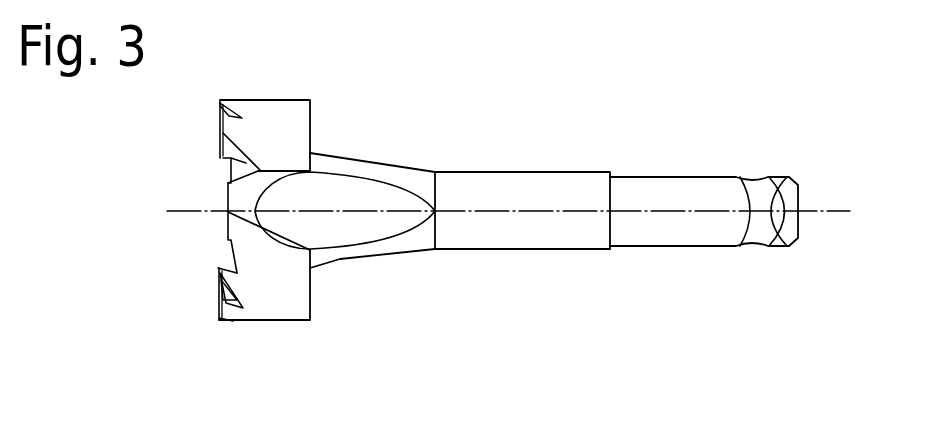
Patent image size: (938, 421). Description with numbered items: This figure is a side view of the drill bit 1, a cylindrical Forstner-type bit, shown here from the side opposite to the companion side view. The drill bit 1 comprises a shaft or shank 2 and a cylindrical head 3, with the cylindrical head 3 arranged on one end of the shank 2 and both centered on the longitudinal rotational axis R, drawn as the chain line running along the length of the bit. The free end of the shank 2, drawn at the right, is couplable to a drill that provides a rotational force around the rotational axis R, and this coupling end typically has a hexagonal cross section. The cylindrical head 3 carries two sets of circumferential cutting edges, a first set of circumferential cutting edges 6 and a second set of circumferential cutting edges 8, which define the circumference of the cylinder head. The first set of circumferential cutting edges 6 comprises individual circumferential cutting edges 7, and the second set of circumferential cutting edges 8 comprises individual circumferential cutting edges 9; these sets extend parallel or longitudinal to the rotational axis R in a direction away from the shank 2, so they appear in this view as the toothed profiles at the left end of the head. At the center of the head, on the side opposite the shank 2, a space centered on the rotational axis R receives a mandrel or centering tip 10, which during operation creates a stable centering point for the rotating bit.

The drill bit 1 is at (397, 153).
The shank 2 is at (552, 171).
The cylindrical head 3 is at (293, 102).
The first set of circumferential cutting edges 6 is at (217, 107).
The circumferential cutting edge 7 is at (222, 125).
The second set of circumferential cutting edges 8 is at (205, 307).
The circumferential cutting edge 9 is at (221, 275).
The centering tip 10 is at (226, 209).
The rotational axis R is at (851, 211).